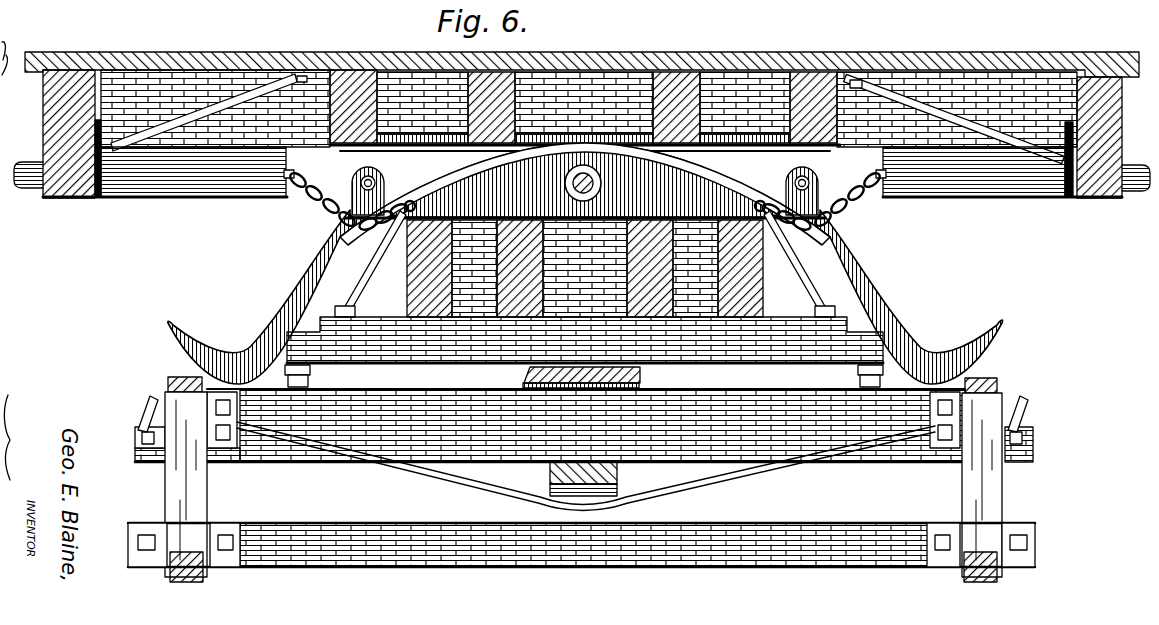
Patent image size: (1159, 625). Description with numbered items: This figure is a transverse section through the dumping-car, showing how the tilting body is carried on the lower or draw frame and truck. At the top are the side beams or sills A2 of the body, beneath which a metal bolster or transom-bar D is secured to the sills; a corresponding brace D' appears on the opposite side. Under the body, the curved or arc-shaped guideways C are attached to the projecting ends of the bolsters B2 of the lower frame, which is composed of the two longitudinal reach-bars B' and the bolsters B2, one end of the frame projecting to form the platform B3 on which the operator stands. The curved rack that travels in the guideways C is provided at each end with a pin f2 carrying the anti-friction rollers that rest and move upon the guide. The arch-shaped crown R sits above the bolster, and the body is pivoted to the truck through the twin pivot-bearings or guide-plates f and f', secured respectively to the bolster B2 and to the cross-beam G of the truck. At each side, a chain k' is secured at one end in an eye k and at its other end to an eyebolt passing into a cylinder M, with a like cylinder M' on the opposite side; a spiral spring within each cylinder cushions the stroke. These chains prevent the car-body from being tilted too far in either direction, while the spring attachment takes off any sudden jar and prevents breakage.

The side beams or sills A2 is at (582, 134).
The metal bolsters or transom-bars D is at (215, 110).
The diagonal brace D' is at (957, 118).
The cylinder M is at (197, 172).
The side box M' is at (970, 172).
The curved or arc-shaped guideways C is at (850, 275).
The arch crown with pivot R is at (585, 194).
The pin f2 is at (584, 191).
The eye k is at (585, 189).
The chain k' is at (583, 214).
The longitudinal reach-bars B' is at (585, 268).
The bolsters B2 is at (585, 340).
The pivot-bearing or guide-plate f is at (589, 374).
The pivot-bearing or guide-plate f' is at (591, 385).
The cross-beam of the truck G is at (584, 425).
The platform B3 is at (581, 545).